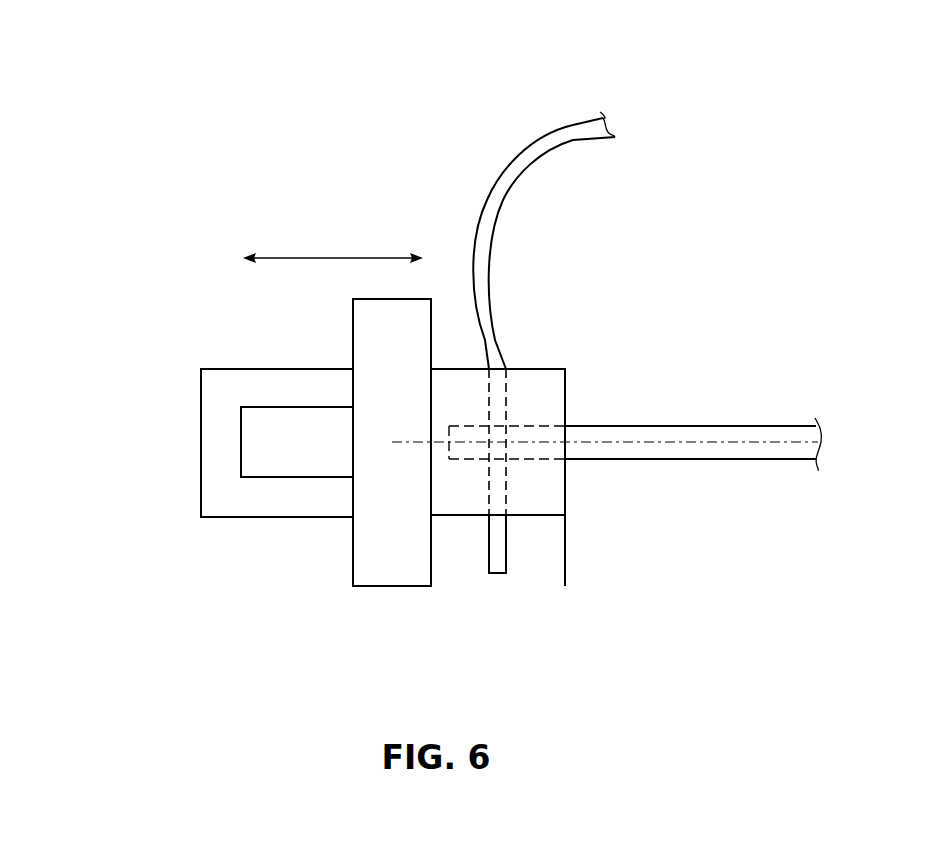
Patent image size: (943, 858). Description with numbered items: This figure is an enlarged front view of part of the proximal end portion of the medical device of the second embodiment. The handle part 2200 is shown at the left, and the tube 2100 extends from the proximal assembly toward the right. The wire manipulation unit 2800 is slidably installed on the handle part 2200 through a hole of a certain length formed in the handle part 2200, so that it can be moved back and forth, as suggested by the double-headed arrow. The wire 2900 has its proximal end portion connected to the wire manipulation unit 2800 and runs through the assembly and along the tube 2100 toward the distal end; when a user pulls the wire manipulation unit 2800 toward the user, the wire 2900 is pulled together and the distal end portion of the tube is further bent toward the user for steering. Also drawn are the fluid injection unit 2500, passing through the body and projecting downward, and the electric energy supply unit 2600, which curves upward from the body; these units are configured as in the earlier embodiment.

The tube 2100 is at (714, 424).
The handle part 2200 is at (202, 440).
The fluid injection unit 2500 is at (495, 562).
The electric energy supply unit 2600 is at (518, 166).
The wire manipulation unit 2800 is at (365, 563).
The wire 2900 is at (688, 443).